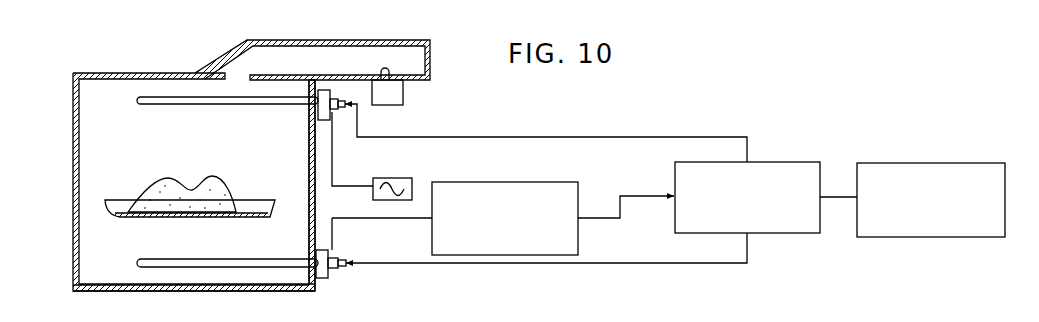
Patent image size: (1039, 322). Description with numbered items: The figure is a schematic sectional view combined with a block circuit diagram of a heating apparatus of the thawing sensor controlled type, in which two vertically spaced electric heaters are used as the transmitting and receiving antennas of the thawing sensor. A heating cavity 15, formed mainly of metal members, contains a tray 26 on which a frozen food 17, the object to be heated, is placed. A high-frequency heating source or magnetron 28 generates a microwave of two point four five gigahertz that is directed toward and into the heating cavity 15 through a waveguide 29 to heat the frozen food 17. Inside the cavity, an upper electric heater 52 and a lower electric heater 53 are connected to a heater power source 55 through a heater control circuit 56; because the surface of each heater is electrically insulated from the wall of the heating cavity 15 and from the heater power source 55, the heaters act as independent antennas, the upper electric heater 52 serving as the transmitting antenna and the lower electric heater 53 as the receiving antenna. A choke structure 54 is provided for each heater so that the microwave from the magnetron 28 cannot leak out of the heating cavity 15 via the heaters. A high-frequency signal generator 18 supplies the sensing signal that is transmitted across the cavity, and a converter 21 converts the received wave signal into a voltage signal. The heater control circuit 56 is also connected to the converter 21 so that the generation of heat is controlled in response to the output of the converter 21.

The heating cavity 15 is at (108, 80).
The frozen food 17 is at (212, 180).
The high-frequency signal generator 18 is at (386, 178).
The converter 21 is at (507, 182).
The tray 26 is at (270, 217).
The high-frequency heating source 28 is at (403, 94).
The waveguide 29 is at (330, 46).
The upper electric heater 52 is at (137, 100).
The lower electric heater 53 is at (140, 262).
The choke structure 54 is at (318, 112).
The heater power source 55 is at (909, 163).
The heater control circuit 56 is at (772, 162).